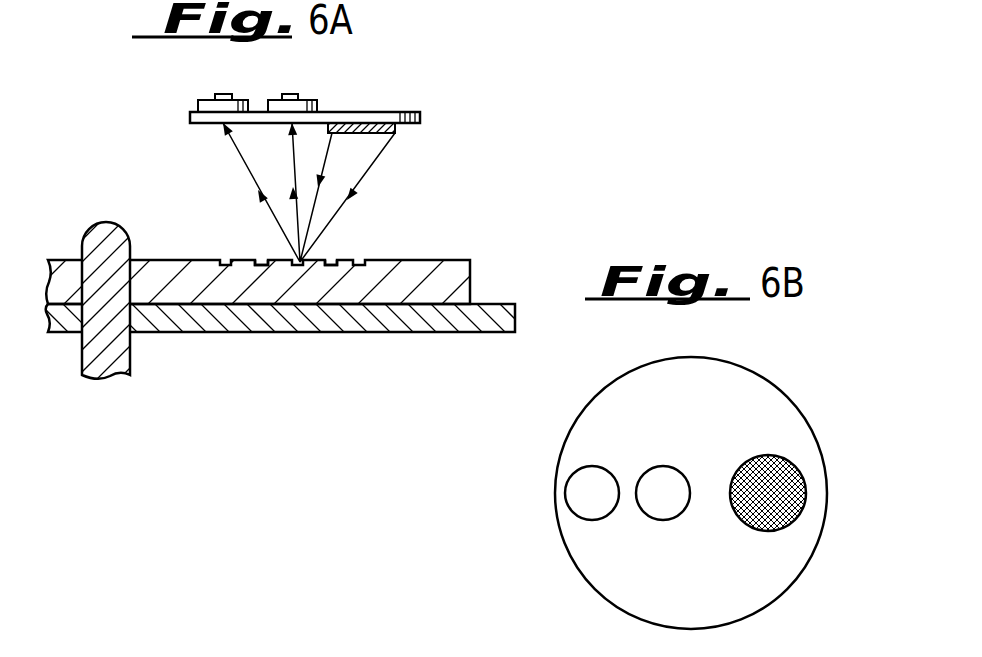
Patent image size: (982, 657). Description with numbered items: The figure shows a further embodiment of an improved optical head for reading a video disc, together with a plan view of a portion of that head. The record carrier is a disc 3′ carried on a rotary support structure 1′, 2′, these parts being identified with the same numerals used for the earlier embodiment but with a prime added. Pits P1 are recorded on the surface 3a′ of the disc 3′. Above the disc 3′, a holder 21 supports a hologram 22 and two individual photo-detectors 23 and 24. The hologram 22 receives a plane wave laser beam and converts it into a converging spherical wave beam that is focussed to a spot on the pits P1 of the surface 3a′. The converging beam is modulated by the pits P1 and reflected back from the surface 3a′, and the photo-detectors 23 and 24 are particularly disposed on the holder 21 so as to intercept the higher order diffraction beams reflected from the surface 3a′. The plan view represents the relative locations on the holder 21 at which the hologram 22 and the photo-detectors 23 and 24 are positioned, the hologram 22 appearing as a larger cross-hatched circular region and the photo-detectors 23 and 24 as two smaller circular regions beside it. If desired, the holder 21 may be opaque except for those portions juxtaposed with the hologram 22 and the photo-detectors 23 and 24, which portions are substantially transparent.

In FIG. 6A, the rotary support structure 1′ is at (117, 233).
In FIG. 6A, the rotary support structure 2′ is at (514, 324).
In FIG. 6A, the disc 3′ is at (470, 282).
In FIG. 6A, the surface 3a′ is at (345, 259).
In FIG. 6A, the pits P1 is at (258, 263).
In FIG. 6A, the holder 21 is at (418, 113).
In FIG. 6B, the holder 21 is at (743, 378).
In FIG. 6A, the hologram 22 is at (400, 133).
In FIG. 6B, the hologram 22 is at (787, 473).
In FIG. 6A, the photo-detector 23 is at (244, 100).
In FIG. 6B, the photo-detector 23 is at (577, 478).
In FIG. 6A, the photo-detector 24 is at (313, 100).
In FIG. 6B, the photo-detector 24 is at (650, 503).